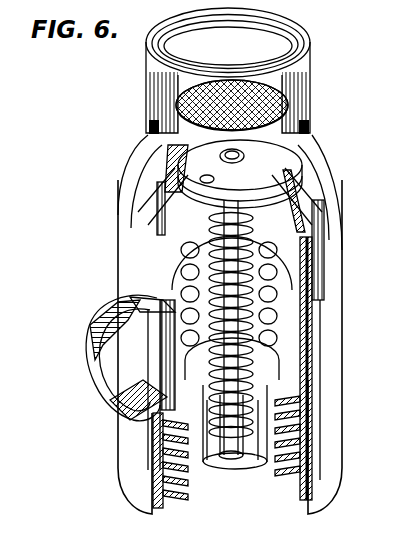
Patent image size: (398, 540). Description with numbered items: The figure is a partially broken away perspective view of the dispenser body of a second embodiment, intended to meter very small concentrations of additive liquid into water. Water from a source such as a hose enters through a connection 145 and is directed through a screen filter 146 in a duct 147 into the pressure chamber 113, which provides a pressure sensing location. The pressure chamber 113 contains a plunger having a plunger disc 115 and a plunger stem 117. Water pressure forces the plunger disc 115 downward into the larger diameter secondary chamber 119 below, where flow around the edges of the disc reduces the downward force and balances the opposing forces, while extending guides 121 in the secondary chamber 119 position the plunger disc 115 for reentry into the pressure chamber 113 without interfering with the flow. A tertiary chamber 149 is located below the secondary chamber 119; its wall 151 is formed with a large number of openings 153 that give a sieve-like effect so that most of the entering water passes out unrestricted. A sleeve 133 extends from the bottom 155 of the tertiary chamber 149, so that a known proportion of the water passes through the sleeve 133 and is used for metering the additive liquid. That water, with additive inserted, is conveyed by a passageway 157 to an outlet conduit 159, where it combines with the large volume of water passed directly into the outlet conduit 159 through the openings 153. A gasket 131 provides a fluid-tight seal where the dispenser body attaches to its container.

The connection 145 is at (296, 42).
The screen filter 146 is at (250, 106).
The duct 147 is at (183, 143).
The plunger disc 115 is at (265, 160).
The plunger stem 117 is at (283, 191).
The extending guides 121 is at (145, 198).
The pressure chamber 113 is at (172, 223).
The secondary chamber 119 is at (175, 270).
The wall 151 is at (290, 257).
The tertiary chamber 149 is at (268, 328).
The openings 153 is at (280, 340).
The outlet conduit 159 is at (105, 375).
The bottom 155 is at (140, 378).
The passageway 157 is at (133, 438).
The gasket 131 is at (293, 417).
The sleeve 133 is at (202, 463).